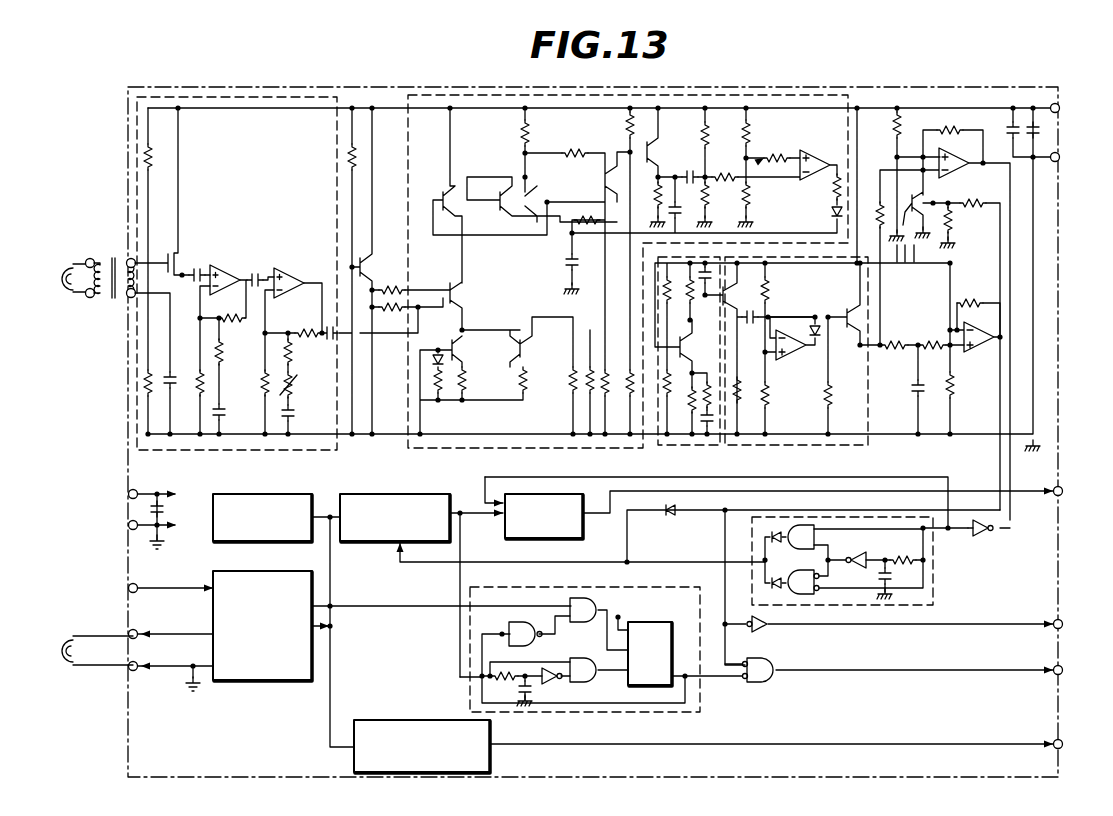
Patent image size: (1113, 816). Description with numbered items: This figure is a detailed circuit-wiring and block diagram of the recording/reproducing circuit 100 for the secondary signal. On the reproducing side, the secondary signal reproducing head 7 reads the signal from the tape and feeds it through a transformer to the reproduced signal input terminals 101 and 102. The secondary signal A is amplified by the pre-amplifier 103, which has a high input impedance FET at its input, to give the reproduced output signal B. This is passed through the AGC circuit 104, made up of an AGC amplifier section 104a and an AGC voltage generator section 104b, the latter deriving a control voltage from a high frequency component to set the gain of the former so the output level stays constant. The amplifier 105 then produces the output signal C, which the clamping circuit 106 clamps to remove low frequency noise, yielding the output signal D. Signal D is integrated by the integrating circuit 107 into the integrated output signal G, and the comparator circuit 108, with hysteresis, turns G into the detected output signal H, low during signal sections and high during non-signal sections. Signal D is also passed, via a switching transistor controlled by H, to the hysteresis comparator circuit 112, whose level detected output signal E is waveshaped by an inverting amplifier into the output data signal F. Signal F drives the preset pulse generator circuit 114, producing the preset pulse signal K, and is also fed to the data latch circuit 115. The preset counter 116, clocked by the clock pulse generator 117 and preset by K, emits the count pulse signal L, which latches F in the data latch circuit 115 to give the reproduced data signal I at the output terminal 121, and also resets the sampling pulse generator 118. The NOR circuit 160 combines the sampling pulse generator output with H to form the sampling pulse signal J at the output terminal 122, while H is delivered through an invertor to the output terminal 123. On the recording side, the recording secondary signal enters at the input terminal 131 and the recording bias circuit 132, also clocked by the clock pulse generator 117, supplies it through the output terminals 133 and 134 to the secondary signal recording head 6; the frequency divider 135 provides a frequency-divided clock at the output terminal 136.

The recording/reproducing circuit 100 is at (147, 88).
The secondary signal reproducing head 7 is at (62, 267).
The reproduced signal input terminal 101 is at (127, 260).
The reproduced signal input terminal 102 is at (128, 298).
The pre-amplifier 103 is at (220, 452).
The AGC circuit 104 is at (457, 455).
The AGC amplifier section 104a is at (520, 277).
The AGC voltage generator section 104b is at (835, 132).
The amplifier 105 is at (695, 452).
The clamping circuit 106 is at (792, 447).
The integrating circuit 107 is at (905, 370).
The comparator circuit 108 is at (958, 360).
The comparator circuit 112 is at (964, 122).
The preset pulse generator circuit 114 is at (935, 588).
The data latch circuit 115 is at (505, 540).
The preset counter 116 is at (376, 494).
The clock pulse generator 117 is at (243, 494).
The sampling pulse generator 118 is at (702, 702).
The output terminal 121 is at (1062, 487).
The output terminal 122 is at (1062, 667).
The output terminal 123 is at (1062, 621).
The input terminal 131 is at (131, 585).
The recording bias circuit 132 is at (273, 686).
The output terminal 133 is at (134, 631).
The output terminal 134 is at (134, 669).
The frequency divider 135 is at (407, 720).
The output terminal 136 is at (1062, 741).
The NOR circuit 160 is at (781, 665).
The secondary signal recording head 6 is at (61, 638).
The secondary signal A is at (175, 626).
The reproduced output signal B is at (390, 338).
The output signal C is at (717, 300).
The output signal D is at (881, 352).
The level detected output signal E is at (1014, 275).
The output data signal F is at (966, 531).
The integrated output signal G is at (917, 341).
The detected output signal H is at (997, 443).
The reproduced data signal I is at (1027, 488).
The sampling pulse signal J is at (1024, 664).
The preset pulse signal K is at (418, 566).
The count pulse signal L is at (460, 511).